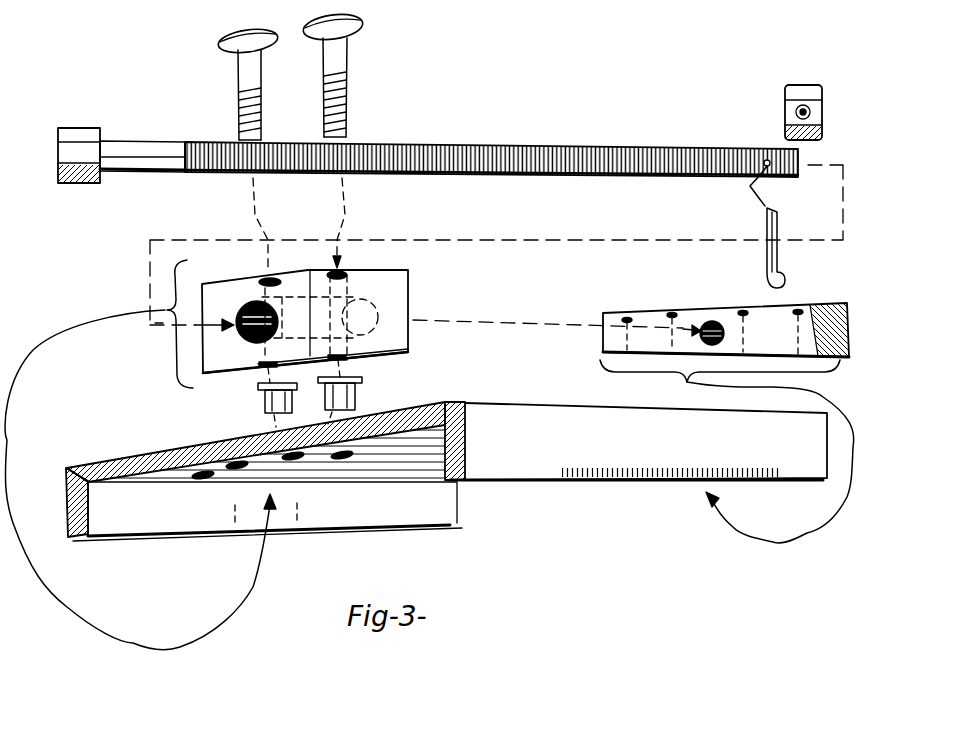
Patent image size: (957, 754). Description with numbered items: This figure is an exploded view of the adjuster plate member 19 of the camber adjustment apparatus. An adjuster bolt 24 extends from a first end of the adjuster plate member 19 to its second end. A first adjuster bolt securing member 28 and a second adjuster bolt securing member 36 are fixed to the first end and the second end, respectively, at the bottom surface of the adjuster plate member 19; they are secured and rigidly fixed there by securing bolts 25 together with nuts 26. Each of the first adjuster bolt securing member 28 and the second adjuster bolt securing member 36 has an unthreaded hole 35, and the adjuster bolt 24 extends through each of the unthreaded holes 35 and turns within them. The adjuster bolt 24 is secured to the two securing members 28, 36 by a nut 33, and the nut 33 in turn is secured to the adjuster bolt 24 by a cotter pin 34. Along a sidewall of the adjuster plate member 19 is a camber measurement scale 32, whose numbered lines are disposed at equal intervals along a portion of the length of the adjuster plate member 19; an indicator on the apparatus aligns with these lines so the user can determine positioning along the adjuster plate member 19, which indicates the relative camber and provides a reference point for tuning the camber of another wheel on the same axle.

The adjuster plate member 19 is at (67, 468).
The adjuster bolt 24 is at (122, 153).
The securing bolts 25 is at (345, 52).
The nuts 26 is at (362, 392).
The first adjuster bolt securing member 28 is at (381, 284).
The camber measurement scale 32 is at (590, 471).
The nut 33 is at (802, 88).
The cotter pin 34 is at (772, 252).
The unthreaded holes 35 is at (241, 330).
The second adjuster bolt securing member 36 is at (765, 325).